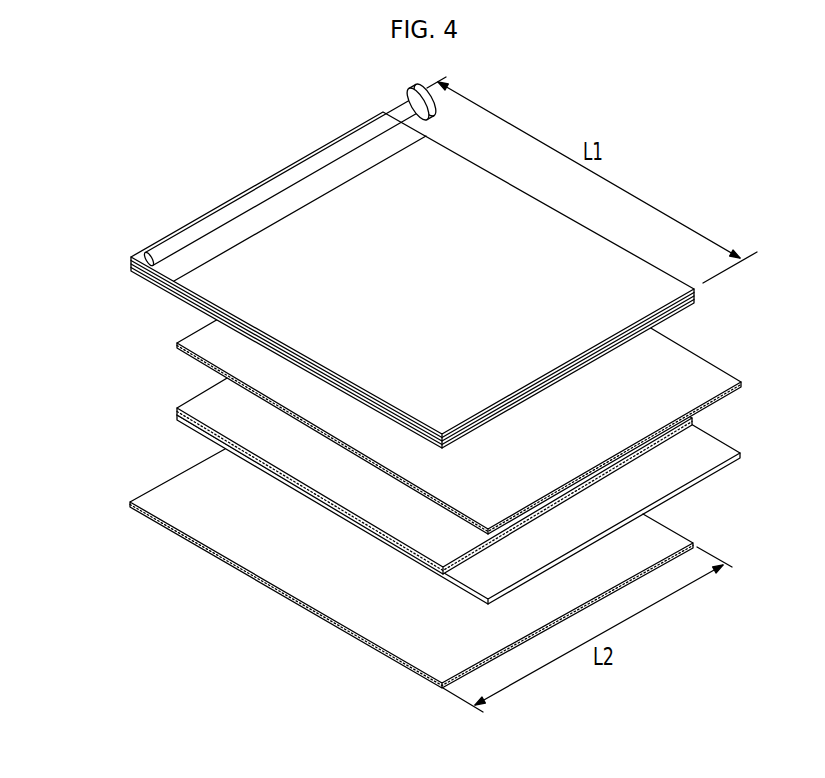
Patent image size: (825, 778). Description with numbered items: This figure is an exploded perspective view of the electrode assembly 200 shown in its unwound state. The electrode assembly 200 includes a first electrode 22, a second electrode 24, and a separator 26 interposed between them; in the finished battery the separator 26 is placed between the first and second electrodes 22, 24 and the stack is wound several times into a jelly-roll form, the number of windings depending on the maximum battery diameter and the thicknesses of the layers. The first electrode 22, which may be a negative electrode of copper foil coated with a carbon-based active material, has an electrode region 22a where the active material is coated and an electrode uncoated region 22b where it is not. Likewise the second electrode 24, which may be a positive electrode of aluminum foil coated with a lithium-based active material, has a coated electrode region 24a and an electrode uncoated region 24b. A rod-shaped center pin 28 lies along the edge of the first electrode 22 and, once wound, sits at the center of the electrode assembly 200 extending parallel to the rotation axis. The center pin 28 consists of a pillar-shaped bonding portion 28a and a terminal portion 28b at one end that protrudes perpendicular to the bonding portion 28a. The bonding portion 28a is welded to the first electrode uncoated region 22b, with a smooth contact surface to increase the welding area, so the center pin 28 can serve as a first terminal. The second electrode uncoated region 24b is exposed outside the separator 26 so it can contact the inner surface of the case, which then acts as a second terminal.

The electrode assembly 200 is at (200, 101).
The first electrode 22 is at (385, 280).
The first electrode region 22a is at (220, 290).
The first electrode uncoated region 22b is at (168, 272).
The second electrode 24 is at (495, 431).
The second electrode region 24a is at (697, 419).
The second electrode uncoated region 24b is at (720, 447).
The separator 26 is at (232, 548).
The center pin 28 is at (291, 149).
The bonding portion 28a is at (359, 137).
The terminal portion 28b is at (416, 93).